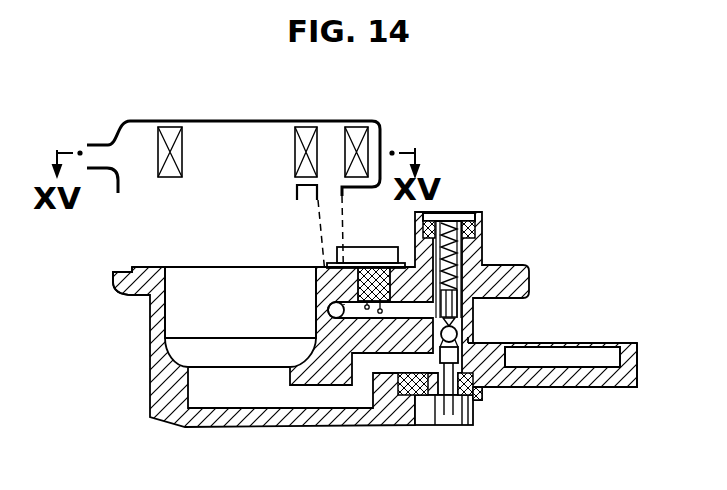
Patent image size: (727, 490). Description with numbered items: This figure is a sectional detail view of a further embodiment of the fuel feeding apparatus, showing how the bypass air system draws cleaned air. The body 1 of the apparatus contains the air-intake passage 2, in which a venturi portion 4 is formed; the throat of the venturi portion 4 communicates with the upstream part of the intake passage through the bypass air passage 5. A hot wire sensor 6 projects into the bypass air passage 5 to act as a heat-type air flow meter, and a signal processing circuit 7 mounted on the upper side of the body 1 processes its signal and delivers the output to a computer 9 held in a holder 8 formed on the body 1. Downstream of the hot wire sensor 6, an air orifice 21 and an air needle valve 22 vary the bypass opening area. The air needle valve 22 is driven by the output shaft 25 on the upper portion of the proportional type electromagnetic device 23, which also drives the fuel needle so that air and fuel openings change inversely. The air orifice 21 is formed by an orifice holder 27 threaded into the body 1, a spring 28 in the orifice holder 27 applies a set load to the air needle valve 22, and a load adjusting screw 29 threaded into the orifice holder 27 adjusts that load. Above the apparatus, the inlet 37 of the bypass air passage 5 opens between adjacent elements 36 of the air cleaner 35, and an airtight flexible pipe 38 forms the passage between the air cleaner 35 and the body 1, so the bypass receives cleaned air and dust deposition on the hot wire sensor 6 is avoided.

The body 1 is at (148, 266).
The air-intake passage 2 is at (212, 272).
The venturi portion 4 is at (187, 391).
The bypass air passage 5 is at (292, 395).
The hot wire sensor 6 is at (334, 318).
The signal processing circuit 7 is at (356, 244).
The holder 8 is at (623, 388).
The computer 9 is at (602, 343).
The air orifice 21 is at (466, 322).
The air needle valve 22 is at (480, 337).
The proportional type electromagnetic device 23 is at (478, 414).
The output shaft 25 is at (437, 398).
The orifice holder 27 is at (478, 224).
The spring 28 is at (460, 257).
The load adjusting screw 29 is at (455, 220).
The air cleaner 35 is at (223, 121).
The elements 36 is at (168, 124).
The inlet 37 is at (333, 129).
The airtight flexible pipe 38 is at (344, 232).